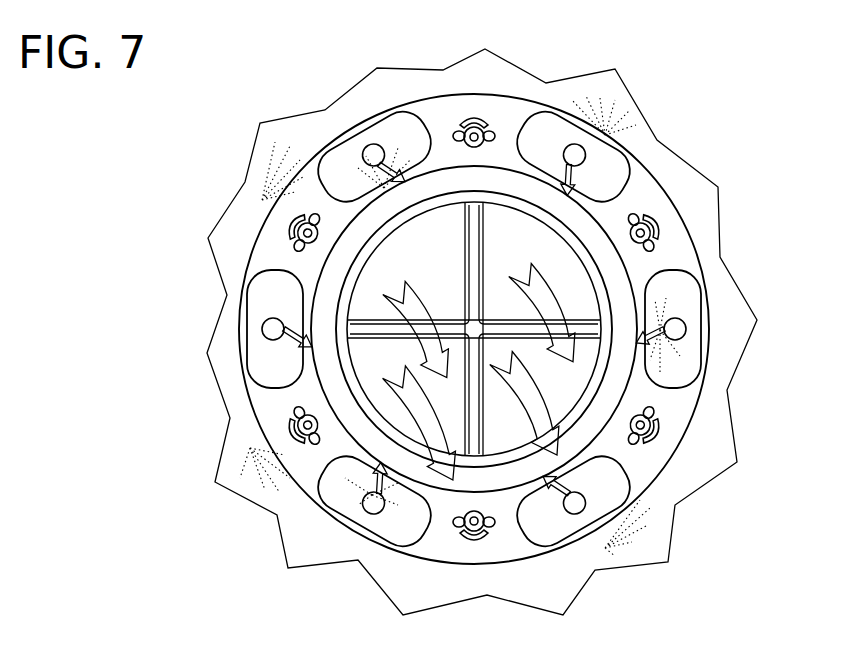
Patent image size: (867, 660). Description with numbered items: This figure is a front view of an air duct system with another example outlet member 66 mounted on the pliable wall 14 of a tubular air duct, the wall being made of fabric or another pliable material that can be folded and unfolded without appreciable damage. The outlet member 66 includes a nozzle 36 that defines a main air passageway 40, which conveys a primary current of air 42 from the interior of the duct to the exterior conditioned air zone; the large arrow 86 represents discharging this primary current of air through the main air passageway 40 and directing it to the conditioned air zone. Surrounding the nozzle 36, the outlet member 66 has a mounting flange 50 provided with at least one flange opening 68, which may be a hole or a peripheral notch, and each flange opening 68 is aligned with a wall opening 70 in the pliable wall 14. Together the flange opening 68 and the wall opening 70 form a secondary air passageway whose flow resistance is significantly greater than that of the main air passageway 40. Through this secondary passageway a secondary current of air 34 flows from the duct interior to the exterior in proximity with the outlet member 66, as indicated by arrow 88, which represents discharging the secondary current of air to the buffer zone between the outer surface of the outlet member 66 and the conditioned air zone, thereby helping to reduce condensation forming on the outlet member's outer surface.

The pliable wall 14 is at (722, 318).
The secondary current of air 34 is at (585, 173).
The nozzle 36 is at (578, 237).
The main air passageway 40 is at (448, 253).
The primary current of air 42 is at (555, 298).
The mounting flange 50 is at (245, 262).
The outlet member 66 is at (320, 148).
The flange opening 68 is at (263, 363).
The wall opening 70 is at (263, 323).
The arrow 86 is at (573, 355).
The arrow 88 is at (572, 156).